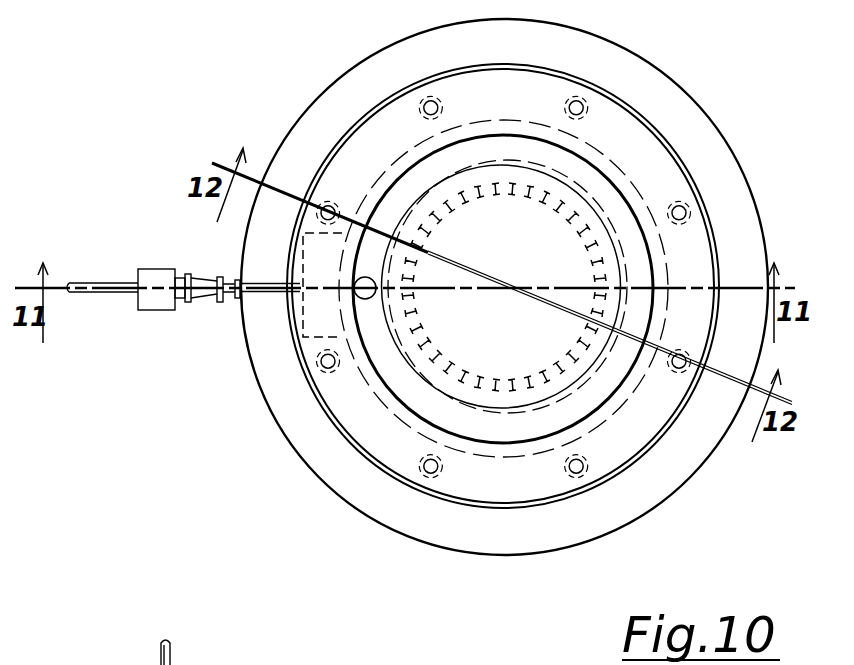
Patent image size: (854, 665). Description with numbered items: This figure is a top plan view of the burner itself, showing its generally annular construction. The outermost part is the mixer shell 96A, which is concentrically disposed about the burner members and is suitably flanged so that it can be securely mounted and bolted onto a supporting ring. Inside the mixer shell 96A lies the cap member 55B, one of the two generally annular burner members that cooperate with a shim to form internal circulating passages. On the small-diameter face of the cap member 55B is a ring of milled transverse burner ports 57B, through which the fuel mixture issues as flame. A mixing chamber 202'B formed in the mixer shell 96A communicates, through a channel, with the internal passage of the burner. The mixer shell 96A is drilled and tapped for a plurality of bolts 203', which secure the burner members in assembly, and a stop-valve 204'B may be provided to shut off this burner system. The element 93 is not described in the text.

The mixer shell 96A is at (647, 80).
The bolts 203' is at (504, 280).
The cap member 55B is at (602, 178).
The burner ports 57B is at (482, 200).
The stop-valve 204'B is at (415, 311).
The mixing chamber 202'B is at (272, 300).
The fitting 93 is at (169, 652).